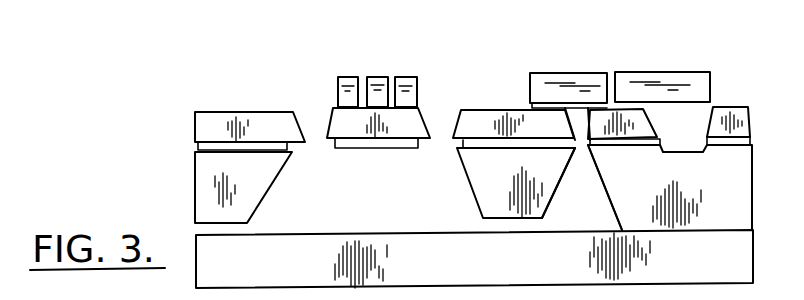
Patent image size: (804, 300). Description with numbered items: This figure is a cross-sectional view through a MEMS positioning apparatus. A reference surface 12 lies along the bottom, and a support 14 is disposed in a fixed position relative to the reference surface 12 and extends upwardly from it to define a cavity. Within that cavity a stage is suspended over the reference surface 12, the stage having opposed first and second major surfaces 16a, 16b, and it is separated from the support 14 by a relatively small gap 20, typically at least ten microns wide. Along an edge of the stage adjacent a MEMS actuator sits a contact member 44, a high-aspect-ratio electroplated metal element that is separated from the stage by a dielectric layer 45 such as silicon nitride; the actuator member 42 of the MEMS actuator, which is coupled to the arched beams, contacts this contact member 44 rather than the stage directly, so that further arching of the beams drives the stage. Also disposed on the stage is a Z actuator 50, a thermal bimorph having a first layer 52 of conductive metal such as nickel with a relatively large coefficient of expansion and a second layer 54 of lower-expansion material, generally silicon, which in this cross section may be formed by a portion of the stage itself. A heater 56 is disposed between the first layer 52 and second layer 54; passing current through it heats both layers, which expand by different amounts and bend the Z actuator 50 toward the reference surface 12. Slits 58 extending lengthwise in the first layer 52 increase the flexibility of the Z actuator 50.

The reference surface 12 is at (345, 234).
The support 14 is at (740, 170).
The first major surface 16a is at (211, 112).
The second major surface 16b is at (236, 223).
The gap 20 is at (578, 143).
The actuator member 42 is at (670, 72).
The contact member 44 is at (567, 73).
The dielectric layer 45 is at (531, 107).
The Z actuator 50 is at (388, 98).
The first layer 52 is at (343, 77).
The second layer 54 is at (403, 127).
The heater 56 is at (418, 107).
The slits 58 is at (362, 77).